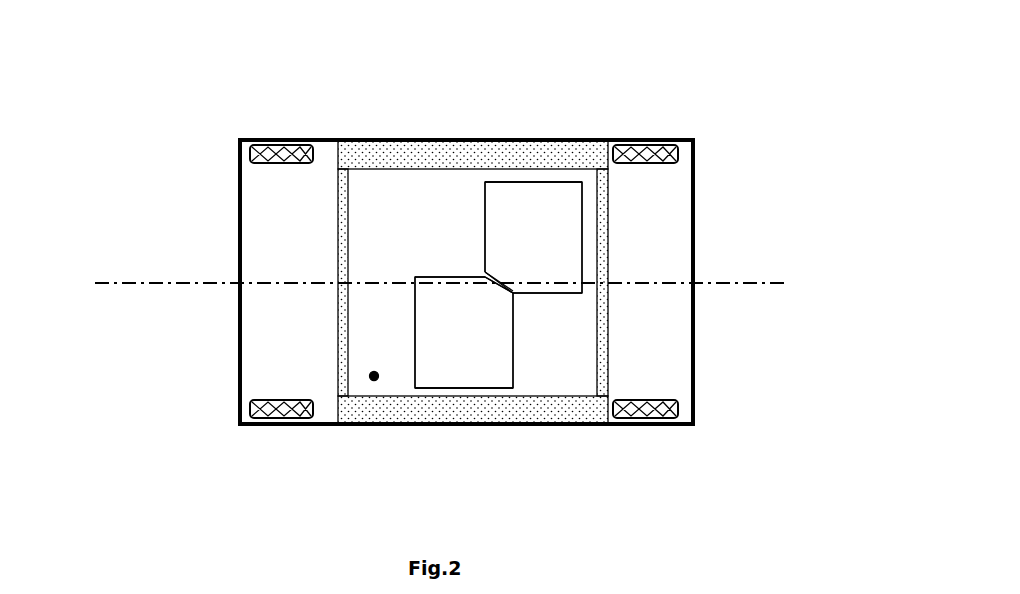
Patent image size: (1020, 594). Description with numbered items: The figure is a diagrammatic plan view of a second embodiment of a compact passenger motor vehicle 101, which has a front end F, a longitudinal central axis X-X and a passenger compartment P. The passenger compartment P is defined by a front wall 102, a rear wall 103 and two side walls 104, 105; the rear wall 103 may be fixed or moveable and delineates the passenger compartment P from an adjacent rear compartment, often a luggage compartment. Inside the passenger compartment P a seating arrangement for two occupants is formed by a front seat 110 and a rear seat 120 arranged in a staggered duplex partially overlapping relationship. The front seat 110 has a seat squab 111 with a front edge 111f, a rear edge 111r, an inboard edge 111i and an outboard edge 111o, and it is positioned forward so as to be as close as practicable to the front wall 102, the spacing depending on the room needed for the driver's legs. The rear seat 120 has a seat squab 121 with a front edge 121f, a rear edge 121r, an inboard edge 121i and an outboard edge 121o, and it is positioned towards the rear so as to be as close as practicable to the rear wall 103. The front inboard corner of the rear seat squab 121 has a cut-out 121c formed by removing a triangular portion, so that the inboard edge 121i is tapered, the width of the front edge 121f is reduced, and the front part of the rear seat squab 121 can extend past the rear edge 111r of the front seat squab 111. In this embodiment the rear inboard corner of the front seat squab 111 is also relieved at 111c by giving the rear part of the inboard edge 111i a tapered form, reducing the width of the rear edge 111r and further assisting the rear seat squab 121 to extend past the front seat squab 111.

The compact passenger motor vehicle 101 is at (234, 147).
The front wall 102 is at (362, 190).
The rear wall 103 is at (602, 186).
The side wall 104 is at (390, 178).
The side wall 105 is at (590, 394).
The front seat 110 is at (446, 391).
The front seat squab 111 is at (414, 389).
The relieved rear inboard corner of front seat squab 111c is at (490, 282).
The front edge of front seat squab 111f is at (413, 352).
The inboard edge of front seat squab 111i is at (437, 276).
The outboard edge of front seat squab 111o is at (485, 391).
The rear edge of front seat squab 111r is at (516, 352).
The rear seat 120 is at (511, 180).
The rear seat squab 121 is at (550, 182).
The cut-out 121c is at (508, 290).
The front edge of rear seat squab 121f is at (483, 214).
The inboard edge of rear seat squab 121i is at (557, 296).
The outboard edge of rear seat squab 121o is at (532, 180).
The rear edge of rear seat squab 121r is at (585, 220).
The front end F is at (237, 245).
The passenger compartment P is at (372, 378).
The longitudinal central axis X is at (446, 283).